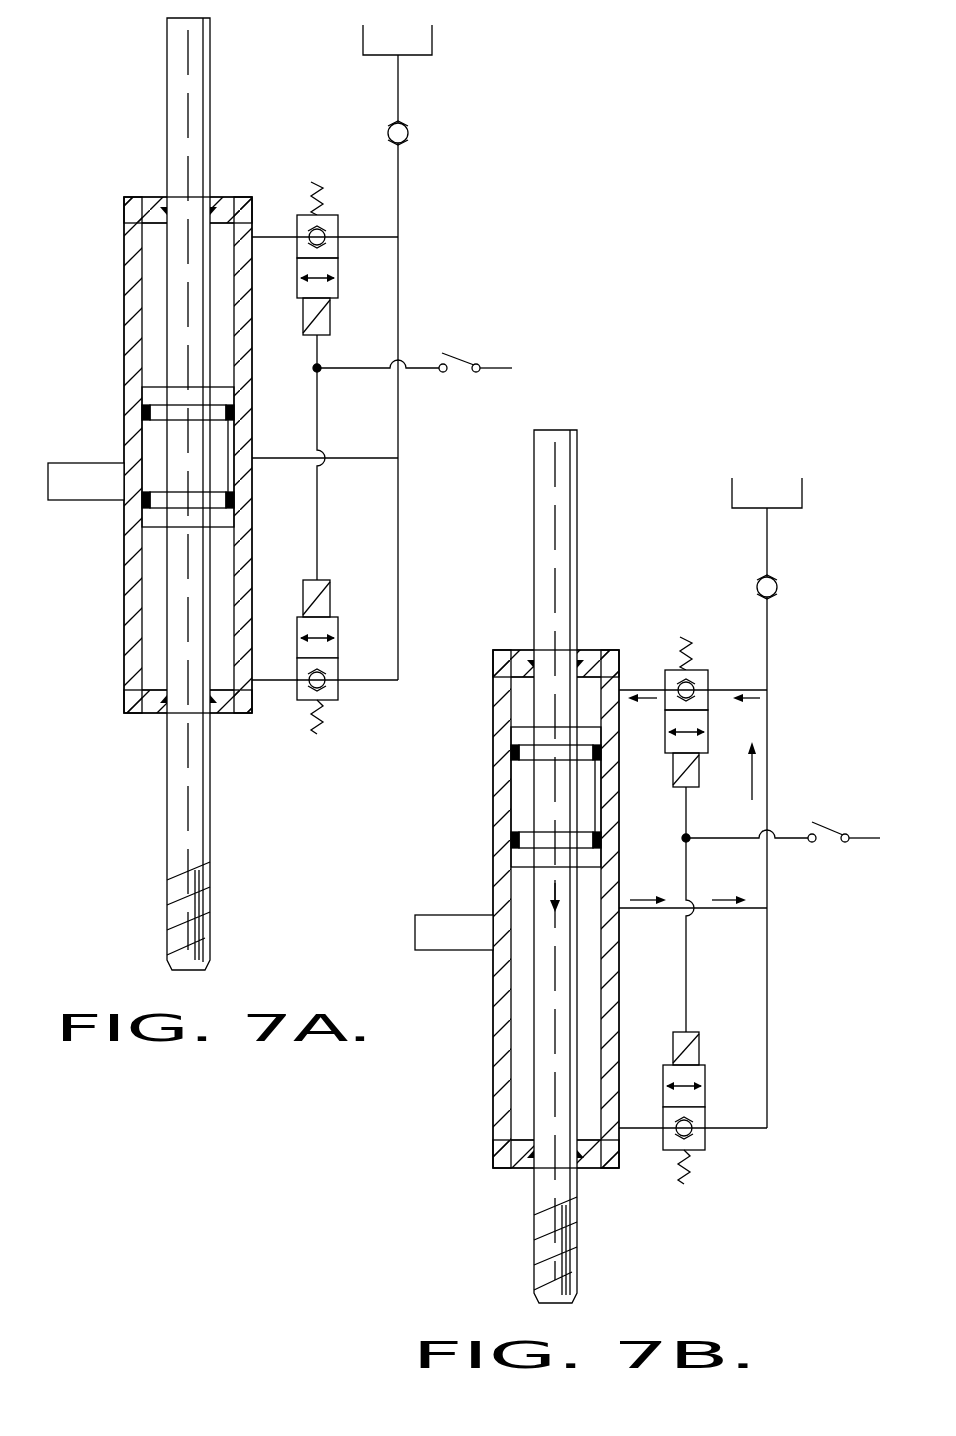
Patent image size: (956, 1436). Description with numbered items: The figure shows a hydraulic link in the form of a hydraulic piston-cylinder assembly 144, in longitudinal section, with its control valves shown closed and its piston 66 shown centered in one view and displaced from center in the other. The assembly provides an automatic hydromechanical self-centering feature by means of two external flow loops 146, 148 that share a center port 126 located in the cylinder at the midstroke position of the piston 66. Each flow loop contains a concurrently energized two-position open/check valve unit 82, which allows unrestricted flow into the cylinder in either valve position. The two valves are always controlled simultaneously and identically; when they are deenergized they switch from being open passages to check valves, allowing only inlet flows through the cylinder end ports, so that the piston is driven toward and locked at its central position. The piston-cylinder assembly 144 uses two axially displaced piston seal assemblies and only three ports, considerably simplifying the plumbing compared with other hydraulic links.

In FIG. 7A, the hydraulic piston-cylinder assembly 144 is at (276, 764).
In FIG. 7B, the hydraulic piston-cylinder assembly 144 is at (556, 866).
In FIG. 7A, the center port 126 is at (242, 449).
In FIG. 7B, the center port 126 is at (616, 895).
In FIG. 7A, the piston 66 is at (156, 535).
In FIG. 7B, the piston 66 is at (556, 797).
In FIG. 7A, the two-position open/check valve unit 82 is at (338, 266).
In FIG. 7B, the two-position open/check valve unit 82 is at (771, 910).
In FIG. 7A, the external flow loop 146 is at (398, 256).
In FIG. 7B, the external flow loop 146 is at (767, 881).
In FIG. 7A, the external flow loop 148 is at (398, 577).
In FIG. 7B, the external flow loop 148 is at (767, 986).